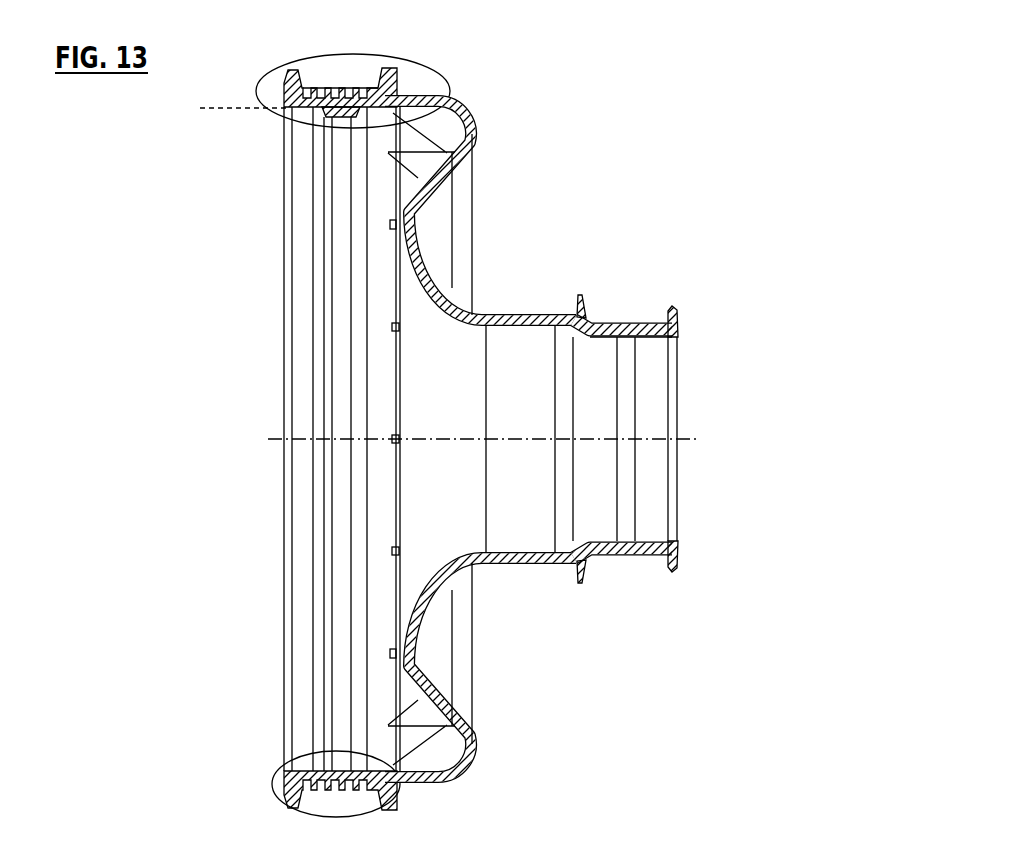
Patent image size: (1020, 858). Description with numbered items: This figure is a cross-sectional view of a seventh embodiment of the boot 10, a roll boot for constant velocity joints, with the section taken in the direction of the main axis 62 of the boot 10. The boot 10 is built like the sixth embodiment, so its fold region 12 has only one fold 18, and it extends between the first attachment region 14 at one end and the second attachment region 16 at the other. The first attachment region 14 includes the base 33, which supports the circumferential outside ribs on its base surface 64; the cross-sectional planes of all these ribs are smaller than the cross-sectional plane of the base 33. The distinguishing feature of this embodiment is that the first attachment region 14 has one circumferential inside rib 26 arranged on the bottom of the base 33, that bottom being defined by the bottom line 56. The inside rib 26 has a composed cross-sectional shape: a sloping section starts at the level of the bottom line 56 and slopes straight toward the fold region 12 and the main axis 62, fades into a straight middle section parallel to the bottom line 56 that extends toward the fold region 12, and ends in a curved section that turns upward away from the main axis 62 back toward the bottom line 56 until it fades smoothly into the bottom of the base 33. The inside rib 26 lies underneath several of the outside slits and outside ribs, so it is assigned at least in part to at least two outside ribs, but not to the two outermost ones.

The boot 10 is at (742, 98).
The fold region 12 is at (588, 188).
The first attachment region 14 is at (268, 62).
The second attachment region 16 is at (722, 318).
The fold 18 is at (425, 186).
The circumferential inside rib 26 is at (335, 118).
The base 33 is at (330, 92).
The bottom line 56 is at (212, 107).
The main axis 62 is at (652, 438).
The base surface 64 is at (617, 315).